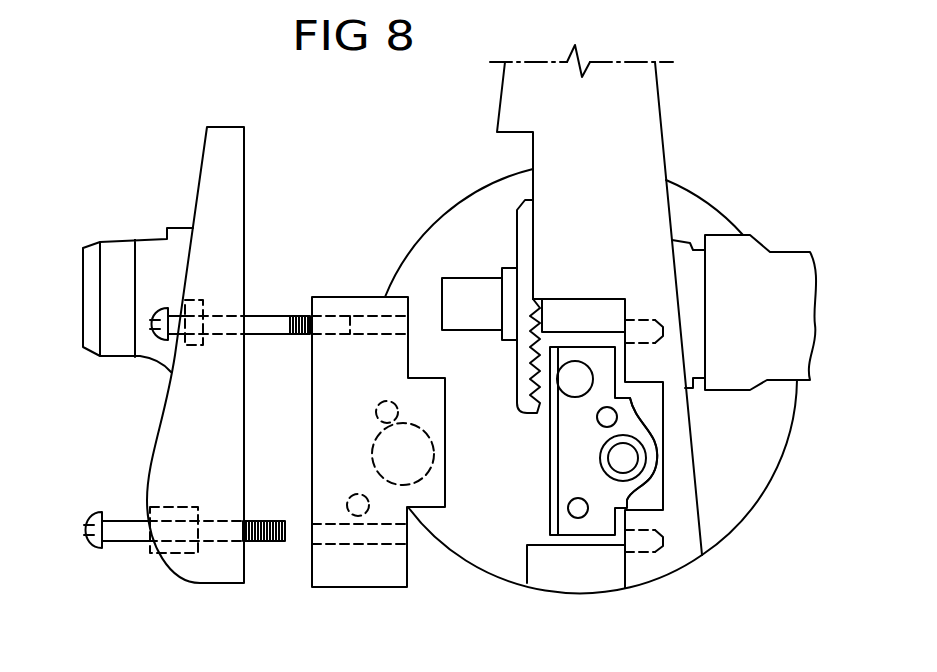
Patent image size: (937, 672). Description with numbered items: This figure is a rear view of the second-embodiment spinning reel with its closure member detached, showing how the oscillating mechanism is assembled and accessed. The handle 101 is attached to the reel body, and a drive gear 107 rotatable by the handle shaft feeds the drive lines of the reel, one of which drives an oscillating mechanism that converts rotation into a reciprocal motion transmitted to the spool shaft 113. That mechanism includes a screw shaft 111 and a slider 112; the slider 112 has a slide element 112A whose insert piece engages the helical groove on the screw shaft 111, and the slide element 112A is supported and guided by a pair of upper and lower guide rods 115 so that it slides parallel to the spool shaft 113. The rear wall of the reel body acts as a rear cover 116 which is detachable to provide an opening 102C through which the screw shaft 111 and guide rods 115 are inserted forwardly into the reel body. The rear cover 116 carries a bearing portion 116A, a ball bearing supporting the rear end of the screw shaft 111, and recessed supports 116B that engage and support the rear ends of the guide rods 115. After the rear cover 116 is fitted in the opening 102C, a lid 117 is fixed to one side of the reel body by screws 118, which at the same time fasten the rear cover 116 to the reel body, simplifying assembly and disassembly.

The handle 101 is at (783, 260).
The opening 102C is at (638, 496).
The drive gear 107 is at (517, 230).
The screw shaft 111 is at (626, 458).
The slider 112 is at (595, 543).
The slide element 112A is at (565, 463).
The spool shaft 113 is at (573, 370).
The guide rods 115 is at (609, 417).
The rear cover 116 is at (347, 297).
The bearing portion 116A is at (428, 472).
The recessed supports 116B is at (396, 406).
The lid 117 is at (213, 152).
The screws 118 is at (267, 320).